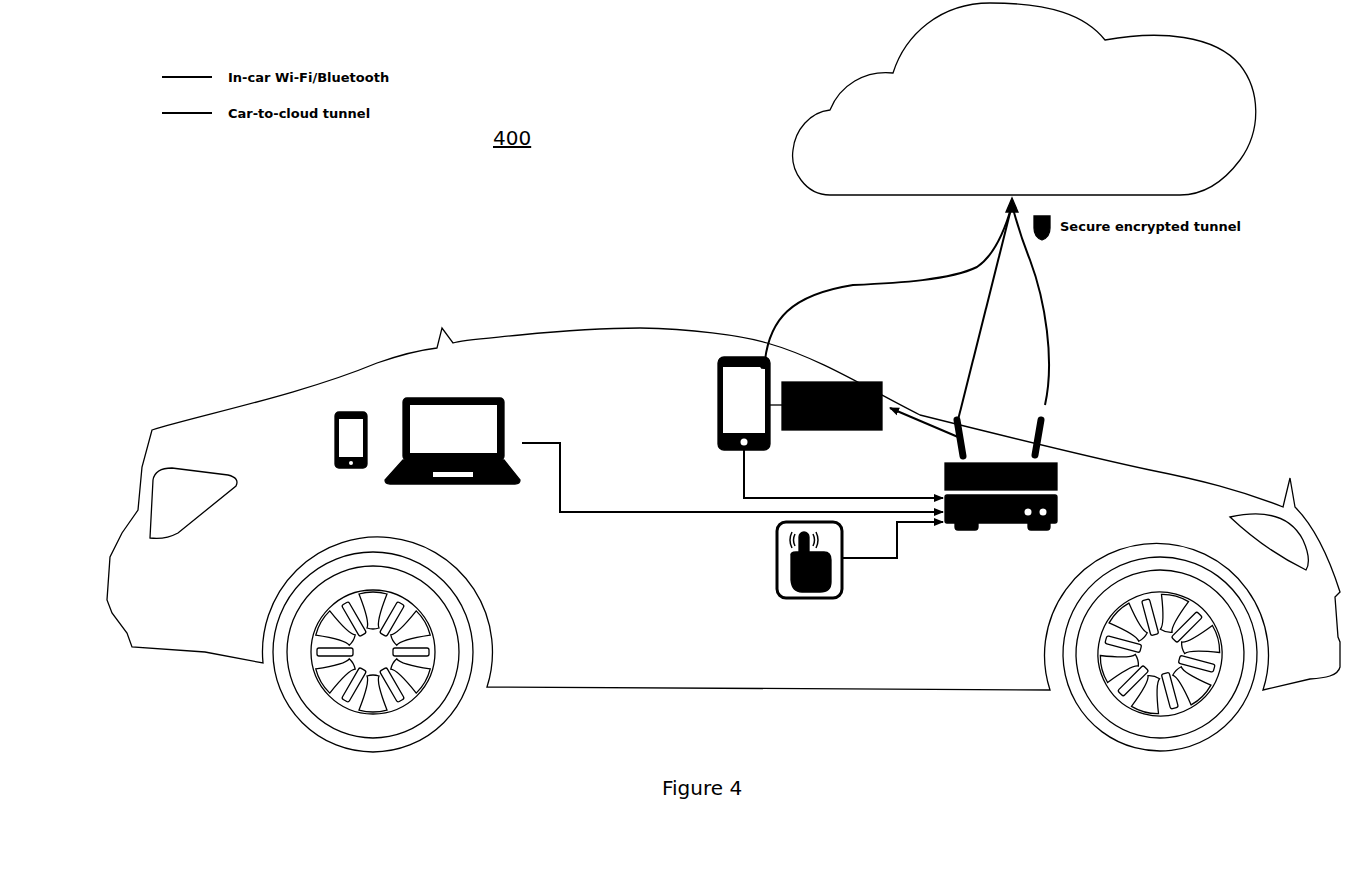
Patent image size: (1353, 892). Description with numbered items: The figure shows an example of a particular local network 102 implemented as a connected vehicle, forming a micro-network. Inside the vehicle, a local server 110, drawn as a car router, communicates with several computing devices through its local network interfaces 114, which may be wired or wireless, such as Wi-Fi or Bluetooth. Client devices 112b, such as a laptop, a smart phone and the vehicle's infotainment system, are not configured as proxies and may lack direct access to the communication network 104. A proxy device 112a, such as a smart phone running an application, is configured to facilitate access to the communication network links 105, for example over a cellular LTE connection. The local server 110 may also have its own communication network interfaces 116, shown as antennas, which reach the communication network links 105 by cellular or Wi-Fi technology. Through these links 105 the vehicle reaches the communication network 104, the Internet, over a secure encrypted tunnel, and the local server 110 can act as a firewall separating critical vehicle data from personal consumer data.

The local network 102 is at (597, 308).
The communication network 104 is at (1232, 84).
The communication network links 105 is at (885, 297).
The local server 110 is at (1060, 515).
The proxy device 112a is at (735, 383).
The client device 112b is at (449, 387).
The local network interfaces 114 is at (940, 526).
The communication network interfaces 116 is at (1043, 445).